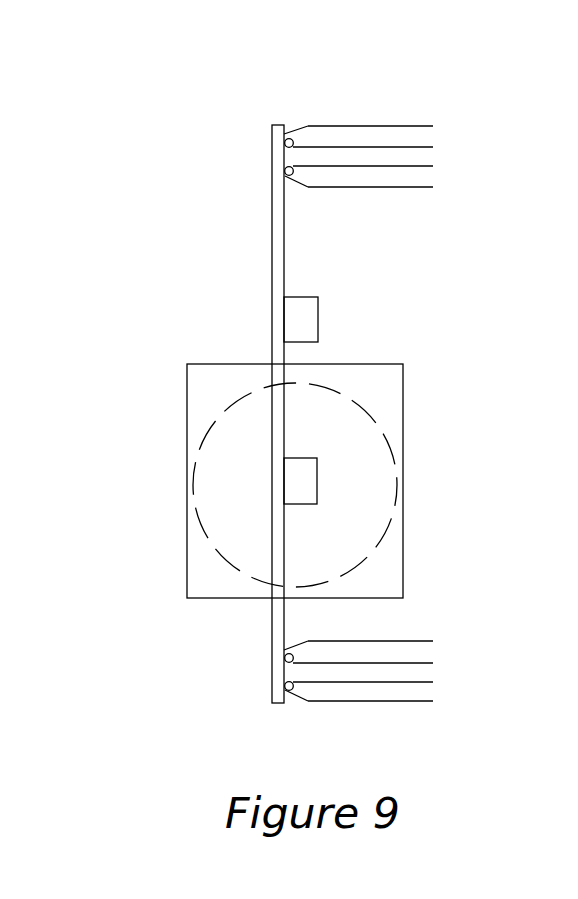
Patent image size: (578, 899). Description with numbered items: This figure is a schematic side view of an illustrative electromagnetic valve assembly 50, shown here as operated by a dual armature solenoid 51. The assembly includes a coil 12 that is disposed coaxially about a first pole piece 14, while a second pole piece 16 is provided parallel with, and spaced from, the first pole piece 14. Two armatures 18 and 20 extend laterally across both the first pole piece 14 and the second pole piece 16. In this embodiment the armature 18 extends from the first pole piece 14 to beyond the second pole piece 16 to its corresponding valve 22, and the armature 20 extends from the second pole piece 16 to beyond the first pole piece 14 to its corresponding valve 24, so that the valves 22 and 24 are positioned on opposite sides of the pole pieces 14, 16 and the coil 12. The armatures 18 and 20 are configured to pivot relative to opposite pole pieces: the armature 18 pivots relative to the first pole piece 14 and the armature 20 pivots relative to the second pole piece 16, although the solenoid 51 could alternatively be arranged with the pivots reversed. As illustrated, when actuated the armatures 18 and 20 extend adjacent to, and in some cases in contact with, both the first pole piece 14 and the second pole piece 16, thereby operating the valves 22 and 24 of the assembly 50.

The electromagnetic valve assembly 50 is at (168, 77).
The dual armature solenoid 51 is at (438, 200).
The coil 12 is at (365, 425).
The first pole piece 14 is at (312, 478).
The second pole piece 16 is at (312, 318).
The armature 18 is at (278, 219).
The armature 20 is at (278, 352).
The valve 22 is at (362, 137).
The valve 24 is at (364, 693).